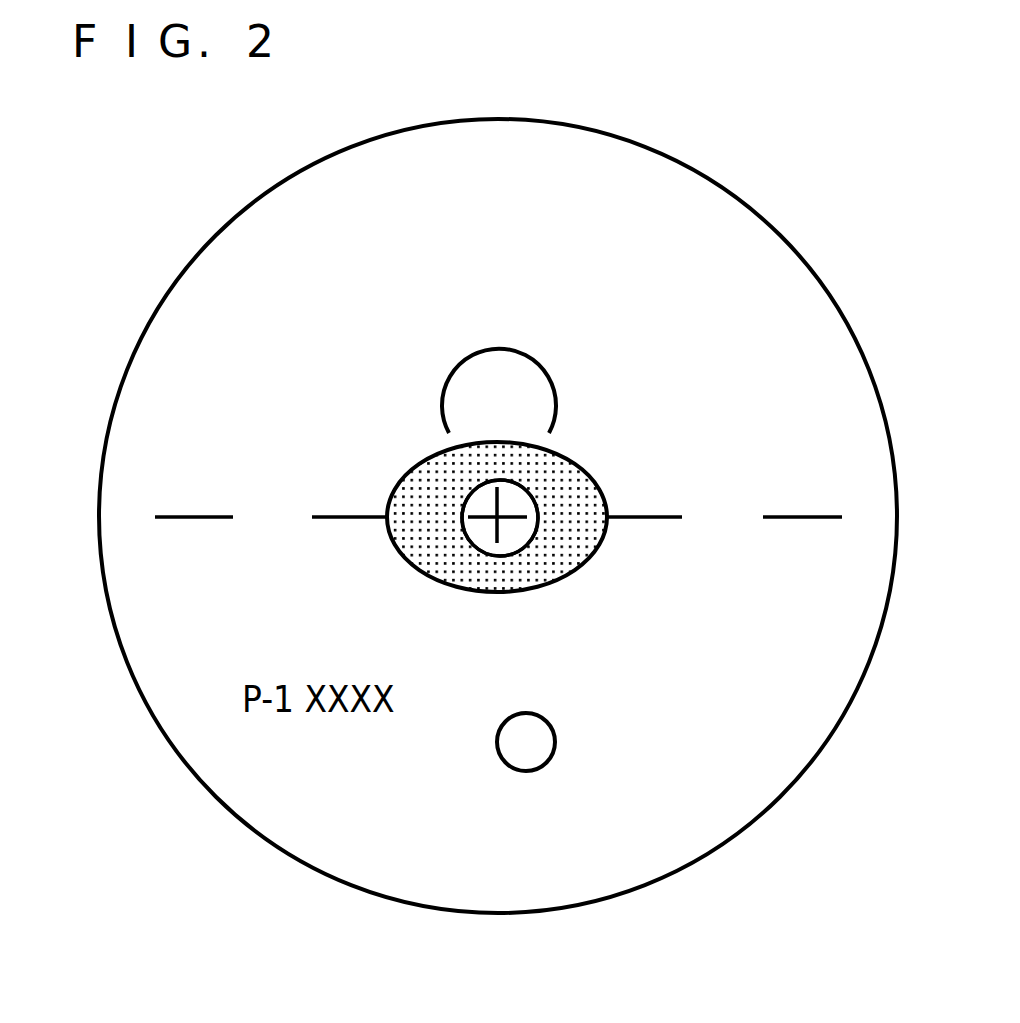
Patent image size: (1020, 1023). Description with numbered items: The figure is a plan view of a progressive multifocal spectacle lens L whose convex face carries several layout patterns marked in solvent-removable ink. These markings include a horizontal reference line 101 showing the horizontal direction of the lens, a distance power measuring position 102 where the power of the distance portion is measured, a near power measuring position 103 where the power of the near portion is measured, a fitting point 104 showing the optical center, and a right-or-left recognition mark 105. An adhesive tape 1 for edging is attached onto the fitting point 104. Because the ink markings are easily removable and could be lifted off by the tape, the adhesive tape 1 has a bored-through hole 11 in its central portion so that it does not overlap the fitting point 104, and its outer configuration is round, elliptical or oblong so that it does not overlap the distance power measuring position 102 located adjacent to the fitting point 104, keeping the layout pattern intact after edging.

The spectacle lens L is at (864, 232).
The adhesive tape for edging 1 is at (583, 457).
The bored-through hole 11 is at (520, 533).
The horizontal reference line 101 is at (655, 518).
The distance power measuring position 102 is at (512, 352).
The near power measuring position 103 is at (551, 757).
The fitting point 104 is at (484, 533).
The right-or-left recognition mark 105 is at (286, 374).